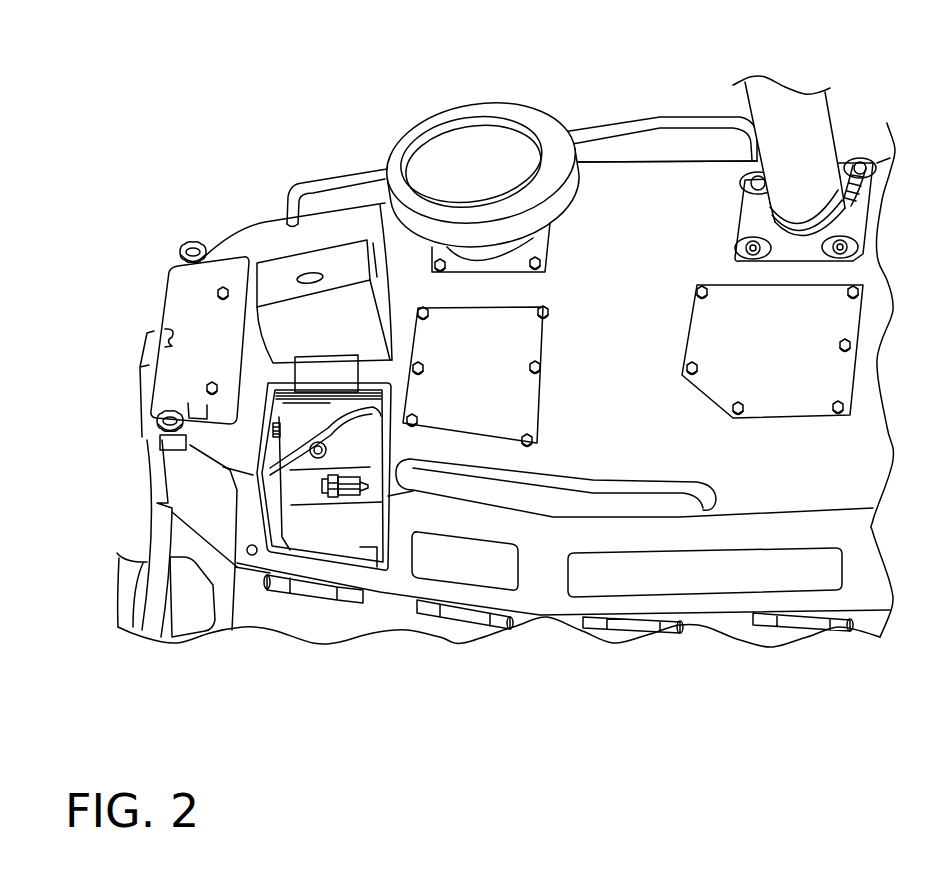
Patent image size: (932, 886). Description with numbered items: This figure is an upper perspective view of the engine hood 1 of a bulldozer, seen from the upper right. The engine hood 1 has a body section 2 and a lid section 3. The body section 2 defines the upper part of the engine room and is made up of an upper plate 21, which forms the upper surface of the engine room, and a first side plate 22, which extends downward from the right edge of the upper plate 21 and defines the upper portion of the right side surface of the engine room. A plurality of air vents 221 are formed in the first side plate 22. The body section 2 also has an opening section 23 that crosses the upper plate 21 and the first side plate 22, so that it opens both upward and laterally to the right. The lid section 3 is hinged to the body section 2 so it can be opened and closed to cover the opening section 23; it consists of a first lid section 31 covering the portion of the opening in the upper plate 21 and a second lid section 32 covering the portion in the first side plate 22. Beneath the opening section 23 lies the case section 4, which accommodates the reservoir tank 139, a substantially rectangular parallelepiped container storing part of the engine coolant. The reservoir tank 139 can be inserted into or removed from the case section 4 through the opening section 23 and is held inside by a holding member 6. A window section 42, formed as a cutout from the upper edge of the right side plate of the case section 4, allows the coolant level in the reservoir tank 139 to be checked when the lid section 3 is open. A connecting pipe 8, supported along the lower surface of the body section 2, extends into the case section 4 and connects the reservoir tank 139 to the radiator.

The engine hood 1 is at (665, 140).
The body section 2 is at (602, 146).
The upper plate 21 is at (637, 187).
The first side plate 22 is at (542, 582).
The air vents 221 is at (465, 570).
The lid section 3 is at (297, 216).
The first lid section 31 is at (387, 280).
The second lid section 32 is at (287, 267).
The case section 4 is at (307, 412).
The opening section 23 is at (298, 480).
The window section 42 is at (362, 566).
The holding member 6 is at (308, 515).
The connecting pipe 8 is at (352, 500).
The reservoir tank 139 is at (313, 493).